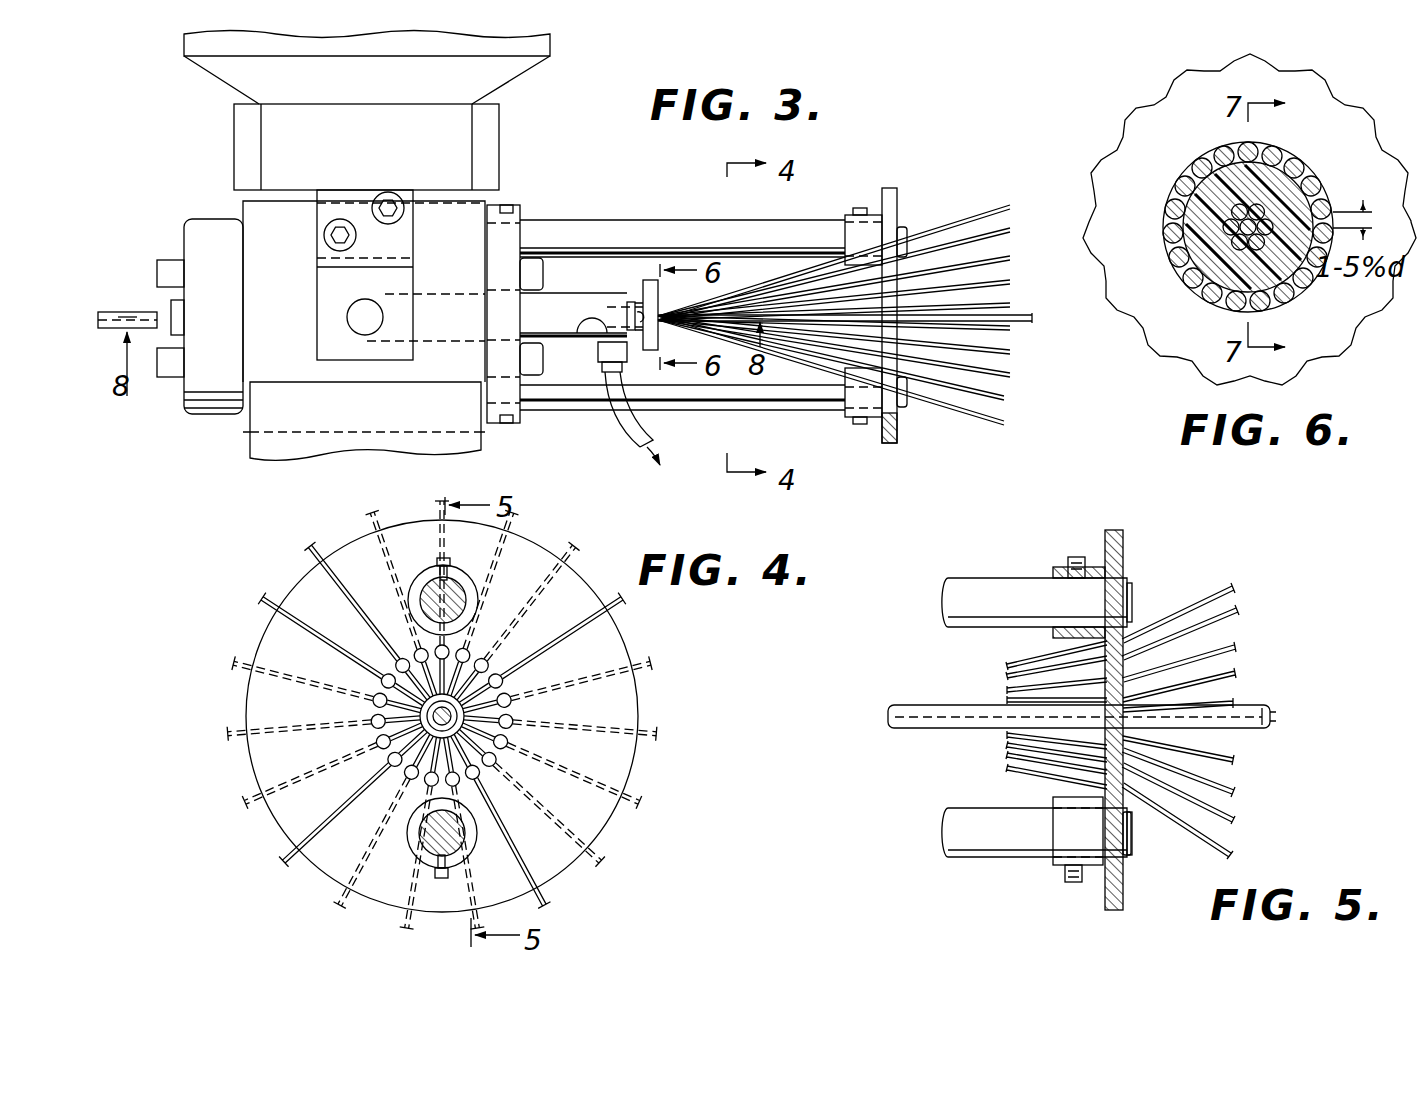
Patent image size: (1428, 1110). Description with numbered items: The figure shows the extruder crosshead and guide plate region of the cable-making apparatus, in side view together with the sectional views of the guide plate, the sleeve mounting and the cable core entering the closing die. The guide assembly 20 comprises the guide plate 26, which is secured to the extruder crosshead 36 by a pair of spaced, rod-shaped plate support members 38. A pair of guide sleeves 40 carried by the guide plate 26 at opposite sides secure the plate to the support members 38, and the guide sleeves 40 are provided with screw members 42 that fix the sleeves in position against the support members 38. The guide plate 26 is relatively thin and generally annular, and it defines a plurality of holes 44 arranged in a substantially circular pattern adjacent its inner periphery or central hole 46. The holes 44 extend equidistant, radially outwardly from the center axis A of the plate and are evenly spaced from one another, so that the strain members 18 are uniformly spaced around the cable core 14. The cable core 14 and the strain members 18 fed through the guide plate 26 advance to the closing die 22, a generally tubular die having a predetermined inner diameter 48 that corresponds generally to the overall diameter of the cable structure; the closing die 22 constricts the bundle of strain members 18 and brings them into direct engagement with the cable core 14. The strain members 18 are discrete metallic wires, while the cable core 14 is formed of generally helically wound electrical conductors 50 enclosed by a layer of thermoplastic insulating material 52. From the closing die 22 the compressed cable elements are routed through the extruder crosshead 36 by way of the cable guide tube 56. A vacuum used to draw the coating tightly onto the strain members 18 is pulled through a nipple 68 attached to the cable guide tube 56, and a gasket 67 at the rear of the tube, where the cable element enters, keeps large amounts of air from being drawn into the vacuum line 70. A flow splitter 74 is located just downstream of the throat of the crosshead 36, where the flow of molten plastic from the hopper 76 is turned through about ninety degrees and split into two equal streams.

In FIG. 3, the cable core 14 is at (1018, 322).
In FIG. 4, the cable core 14 is at (458, 705).
In FIG. 5, the cable core 14 is at (1264, 706).
In FIG. 6, the cable core 14 is at (1263, 198).
In FIG. 3, the strain members 18 is at (978, 236).
In FIG. 4, the strain members 18 is at (383, 740).
In FIG. 5, the strain members 18 is at (1240, 642).
In FIG. 6, the strain members 18 is at (1208, 158).
In FIG. 3, the guide assembly 20 is at (614, 216).
In FIG. 3, the closing die 22 is at (650, 352).
In FIG. 6, the closing die 22 is at (1334, 97).
In FIG. 3, the guide plate 26 is at (903, 431).
In FIG. 4, the guide plate 26 is at (244, 776).
In FIG. 5, the guide plate 26 is at (1129, 540).
In FIG. 3, the extruder crosshead 36 is at (205, 416).
In FIG. 3, the plate support members 38 is at (750, 232).
In FIG. 4, the plate support members 38 is at (425, 592).
In FIG. 5, the plate support members 38 is at (945, 840).
In FIG. 3, the guide sleeves 40 is at (850, 237).
In FIG. 4, the guide sleeves 40 is at (466, 583).
In FIG. 5, the guide sleeves 40 is at (1055, 573).
In FIG. 3, the screw members 42 is at (860, 208).
In FIG. 4, the screw members 42 is at (437, 562).
In FIG. 5, the screw members 42 is at (1072, 557).
In FIG. 4, the holes 44 is at (373, 717).
In FIG. 5, the holes 44 is at (1118, 648).
In FIG. 4, the central hole 46 is at (420, 707).
In FIG. 5, the central hole 46 is at (1070, 710).
In FIG. 3, the inner diameter 48 is at (637, 303).
In FIG. 6, the inner diameter 48 is at (1217, 155).
In FIG. 5, the electrical conductors 50 is at (1280, 720).
In FIG. 6, the electrical conductors 50 is at (1231, 230).
In FIG. 5, the thermoplastic insulating material 52 is at (1252, 724).
In FIG. 6, the thermoplastic insulating material 52 is at (1200, 263).
In FIG. 3, the cable guide tube 56 is at (558, 305).
In FIG. 3, the gasket 67 is at (640, 317).
In FIG. 3, the nipple 68 is at (603, 354).
In FIG. 3, the vacuum line 70 is at (595, 328).
In FIG. 3, the flow splitter 74 is at (377, 282).
In FIG. 3, the hopper 76 is at (210, 72).
In FIG. 5, the center axis A is at (1075, 718).